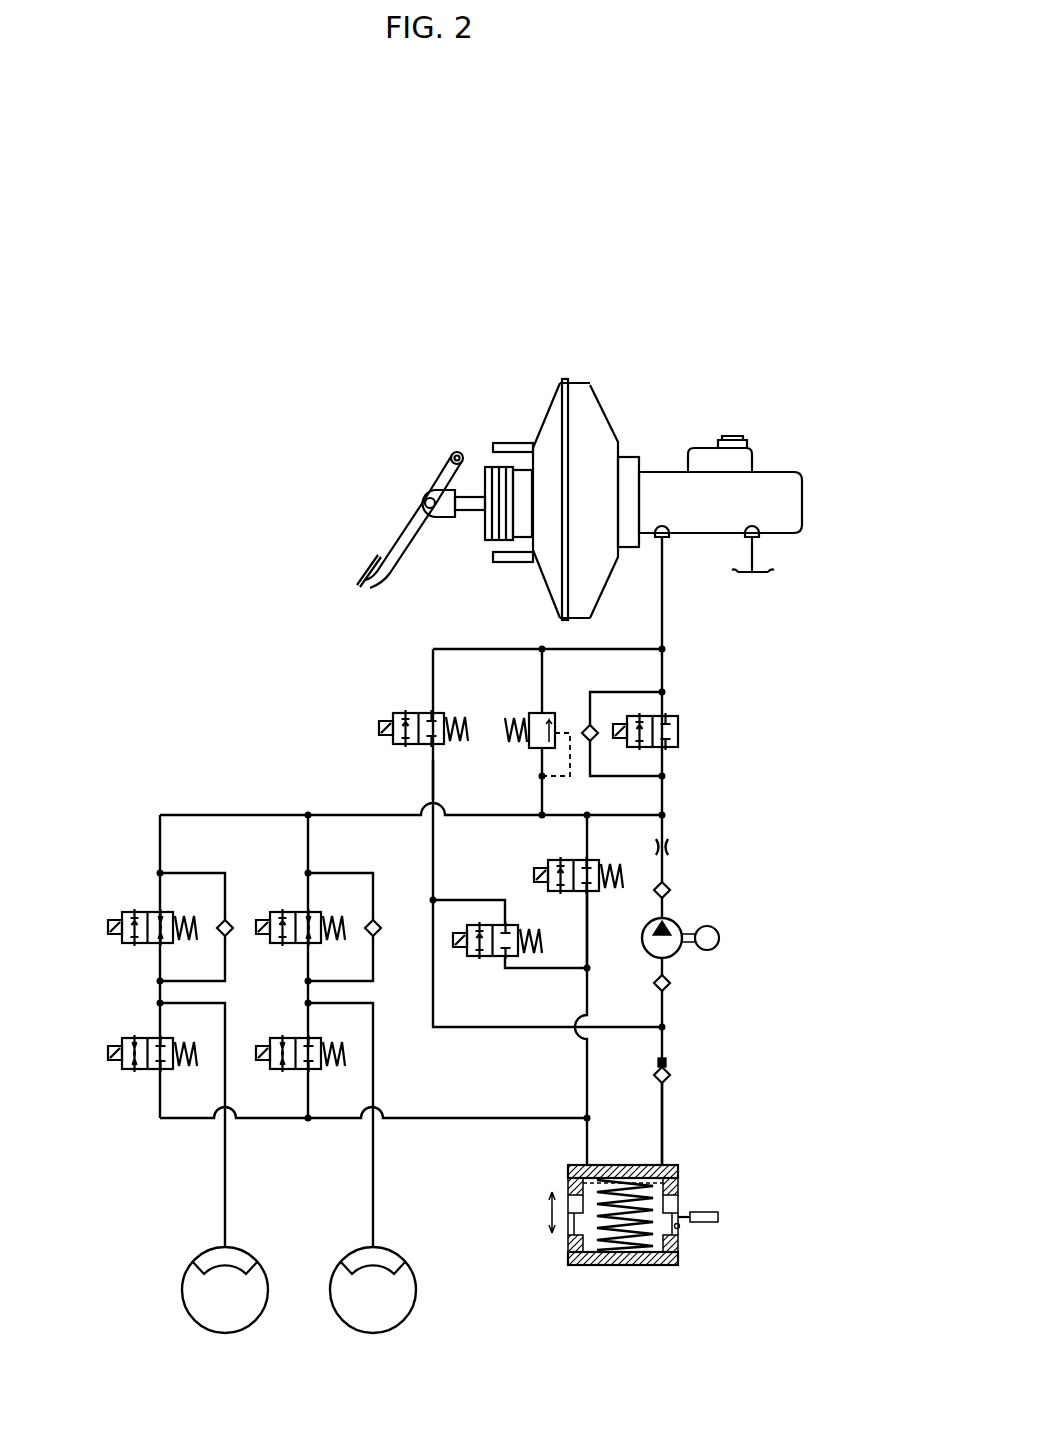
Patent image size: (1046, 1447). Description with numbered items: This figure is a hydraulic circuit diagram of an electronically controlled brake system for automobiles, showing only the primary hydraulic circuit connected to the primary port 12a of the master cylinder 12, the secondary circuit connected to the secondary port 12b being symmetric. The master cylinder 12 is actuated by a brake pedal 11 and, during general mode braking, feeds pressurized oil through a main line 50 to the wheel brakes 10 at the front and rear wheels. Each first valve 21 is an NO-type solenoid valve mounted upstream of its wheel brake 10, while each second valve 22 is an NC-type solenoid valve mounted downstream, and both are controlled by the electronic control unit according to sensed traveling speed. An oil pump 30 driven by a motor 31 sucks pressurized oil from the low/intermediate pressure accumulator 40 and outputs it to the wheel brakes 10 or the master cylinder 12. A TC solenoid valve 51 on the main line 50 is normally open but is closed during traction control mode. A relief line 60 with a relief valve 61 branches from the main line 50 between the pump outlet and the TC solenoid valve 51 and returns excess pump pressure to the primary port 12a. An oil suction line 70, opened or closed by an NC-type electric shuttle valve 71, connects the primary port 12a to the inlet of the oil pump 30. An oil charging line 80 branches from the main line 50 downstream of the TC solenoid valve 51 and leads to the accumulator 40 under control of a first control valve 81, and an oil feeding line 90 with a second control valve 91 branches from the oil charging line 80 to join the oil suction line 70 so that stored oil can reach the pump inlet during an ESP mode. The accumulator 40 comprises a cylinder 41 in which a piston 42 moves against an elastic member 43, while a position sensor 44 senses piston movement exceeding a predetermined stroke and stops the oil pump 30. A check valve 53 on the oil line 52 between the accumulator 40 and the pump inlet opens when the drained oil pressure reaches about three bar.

The wheel brake 10 is at (203, 1252).
The brake pedal 11 is at (402, 537).
The master cylinder 12 is at (770, 480).
The primary port 12a is at (673, 540).
The secondary port 12b is at (762, 535).
The first valve 21 is at (145, 912).
The second valve 22 is at (145, 1038).
The oil pump 30 is at (678, 920).
The motor 31 is at (720, 938).
The low/intermediate pressure accumulator 40 is at (706, 1189).
The cylinder 41 is at (680, 1230).
The piston 42 is at (570, 1168).
The elastic member 43 is at (580, 1250).
The position sensor 44 is at (722, 1217).
The main line 50 is at (665, 800).
The TC solenoid valve 51 is at (680, 732).
The oil line 52 is at (665, 1128).
The check valve 53 is at (672, 1075).
The relief line 60 is at (541, 800).
The relief valve 61 is at (527, 745).
The oil suction line 70 is at (432, 672).
The electric shuttle valve 71 is at (415, 713).
The oil charging line 80 is at (590, 907).
The first control valve 81 is at (546, 862).
The oil feeding line 90 is at (541, 969).
The second control valve 91 is at (478, 960).